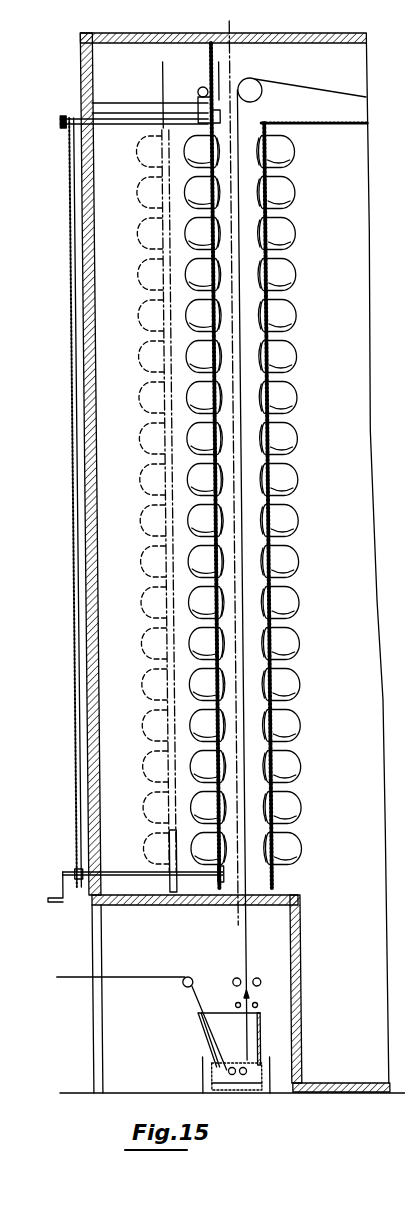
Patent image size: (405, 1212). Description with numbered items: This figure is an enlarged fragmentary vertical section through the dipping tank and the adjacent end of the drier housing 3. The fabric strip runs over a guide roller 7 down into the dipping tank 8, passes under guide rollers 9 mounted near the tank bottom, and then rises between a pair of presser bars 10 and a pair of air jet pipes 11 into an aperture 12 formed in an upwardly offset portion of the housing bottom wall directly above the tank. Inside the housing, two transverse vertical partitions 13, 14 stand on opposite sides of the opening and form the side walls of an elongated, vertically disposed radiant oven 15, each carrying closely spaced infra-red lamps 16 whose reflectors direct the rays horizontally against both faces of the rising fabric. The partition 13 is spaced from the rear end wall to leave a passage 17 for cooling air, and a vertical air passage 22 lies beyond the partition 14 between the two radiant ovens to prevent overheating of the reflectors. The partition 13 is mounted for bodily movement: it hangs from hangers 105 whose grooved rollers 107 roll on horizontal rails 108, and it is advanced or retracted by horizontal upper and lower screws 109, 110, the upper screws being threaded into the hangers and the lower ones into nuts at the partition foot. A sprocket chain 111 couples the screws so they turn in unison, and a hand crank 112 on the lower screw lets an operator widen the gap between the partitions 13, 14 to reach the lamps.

The drier housing 3 is at (81, 423).
The guide roller 7 is at (173, 985).
The dipping tank 8 is at (251, 1042).
The guide rollers 9 is at (235, 1058).
The presser bars 10 is at (230, 1003).
The air jet pipes 11 is at (225, 978).
The aperture 12 is at (238, 897).
The partition 13 is at (180, 513).
The partition 14 is at (259, 312).
The radiant oven 15 is at (244, 410).
The infra-red lamps 16 is at (181, 433).
The passage 17 is at (109, 297).
The vertical air passage 22 is at (318, 533).
The hangers 105 is at (199, 108).
The grooved rollers 107 is at (202, 88).
The horizontal rails 108 is at (103, 102).
The upper screws 109 is at (126, 123).
The lower screws 110 is at (116, 870).
The sprocket chain 111 is at (66, 672).
The hand crank 112 is at (51, 903).